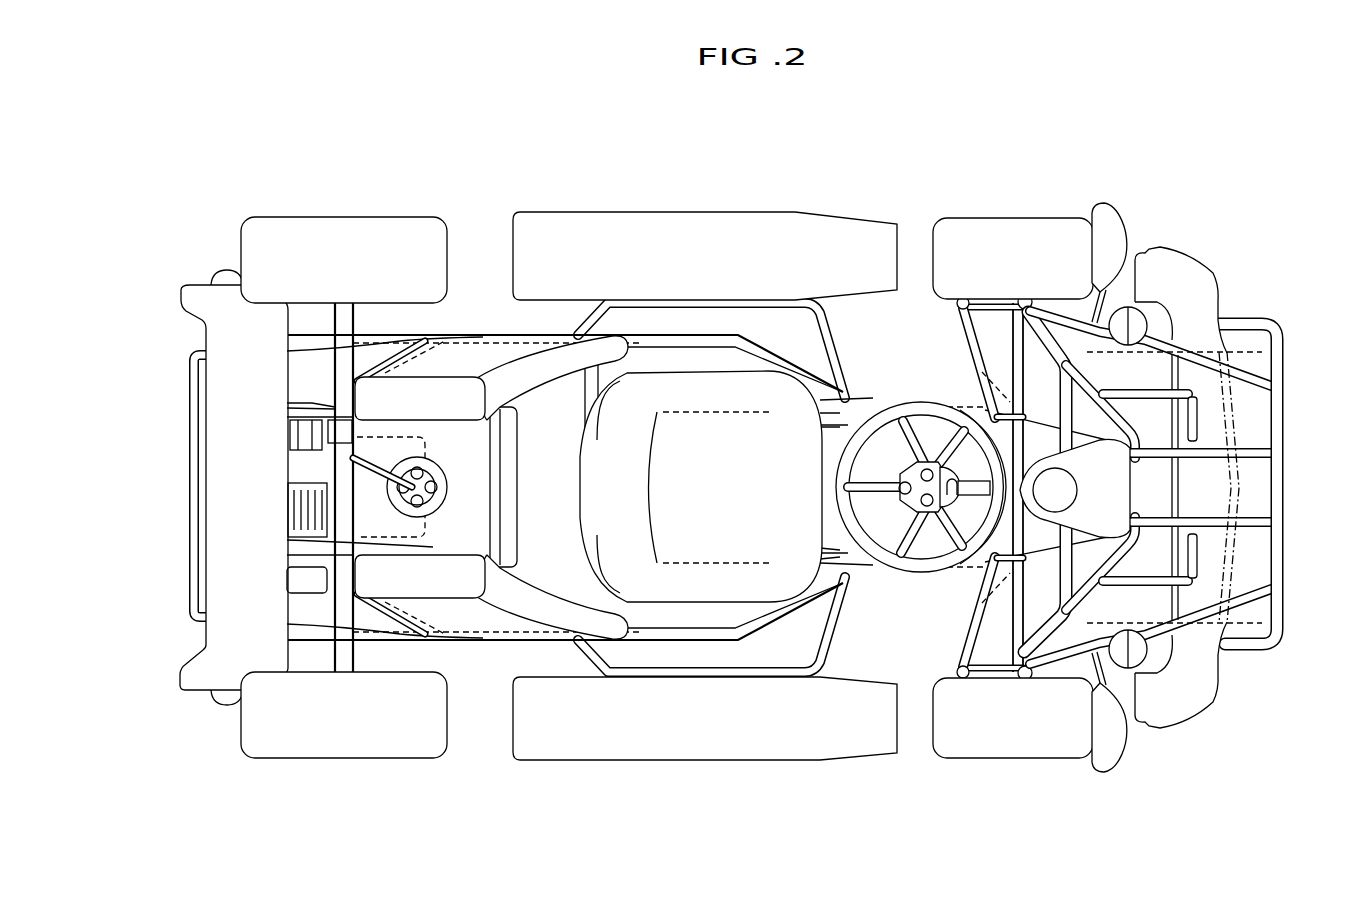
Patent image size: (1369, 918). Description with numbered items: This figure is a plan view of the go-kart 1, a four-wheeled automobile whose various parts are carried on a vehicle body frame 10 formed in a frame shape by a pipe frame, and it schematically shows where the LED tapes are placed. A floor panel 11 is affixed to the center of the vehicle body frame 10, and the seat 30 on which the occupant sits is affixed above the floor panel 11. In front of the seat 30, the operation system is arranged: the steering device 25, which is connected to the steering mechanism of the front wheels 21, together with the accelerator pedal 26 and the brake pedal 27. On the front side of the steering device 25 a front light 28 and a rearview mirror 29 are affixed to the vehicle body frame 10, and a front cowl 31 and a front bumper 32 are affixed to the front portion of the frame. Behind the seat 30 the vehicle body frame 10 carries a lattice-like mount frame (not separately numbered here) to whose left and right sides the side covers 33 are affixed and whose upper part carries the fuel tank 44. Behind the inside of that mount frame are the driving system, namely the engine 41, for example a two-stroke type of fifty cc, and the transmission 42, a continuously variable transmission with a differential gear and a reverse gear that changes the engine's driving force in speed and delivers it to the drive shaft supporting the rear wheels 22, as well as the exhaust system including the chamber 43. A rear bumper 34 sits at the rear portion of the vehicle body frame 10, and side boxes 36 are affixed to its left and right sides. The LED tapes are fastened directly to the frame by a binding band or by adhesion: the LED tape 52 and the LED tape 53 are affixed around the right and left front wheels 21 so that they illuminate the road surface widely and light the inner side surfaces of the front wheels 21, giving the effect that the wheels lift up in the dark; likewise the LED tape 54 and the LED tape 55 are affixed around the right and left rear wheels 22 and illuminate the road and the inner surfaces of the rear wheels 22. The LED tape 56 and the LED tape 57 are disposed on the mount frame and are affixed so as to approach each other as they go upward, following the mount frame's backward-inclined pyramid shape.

The go-kart 1 is at (1208, 176).
The vehicle body frame 10 is at (646, 318).
The floor panel 11 is at (701, 362).
The front wheel 21 is at (1050, 233).
The rear wheel 22 is at (281, 233).
The steering device 25 is at (877, 396).
The accelerator pedal 26 is at (1197, 557).
The brake pedal 27 is at (1197, 418).
The front light 28 is at (1108, 463).
The rearview mirror 29 is at (1107, 230).
The seat 30 is at (761, 393).
The front cowl 31 is at (1197, 697).
The front bumper 32 is at (1273, 358).
The side cover 33 is at (454, 357).
The rear bumper 34 is at (193, 397).
The side box 36 is at (574, 233).
The engine 41 is at (373, 450).
The transmission 42 is at (343, 468).
The chamber 43 is at (303, 583).
The fuel tank 44 is at (343, 548).
The LED tape 52 is at (914, 573).
The LED tape 53 is at (913, 400).
The LED tape 54 is at (500, 636).
The LED tape 55 is at (502, 397).
The LED tape 56 is at (377, 600).
The LED tape 57 is at (358, 407).